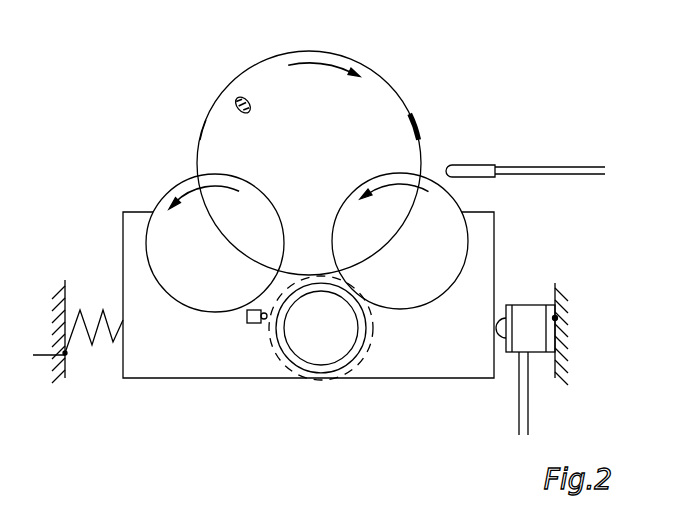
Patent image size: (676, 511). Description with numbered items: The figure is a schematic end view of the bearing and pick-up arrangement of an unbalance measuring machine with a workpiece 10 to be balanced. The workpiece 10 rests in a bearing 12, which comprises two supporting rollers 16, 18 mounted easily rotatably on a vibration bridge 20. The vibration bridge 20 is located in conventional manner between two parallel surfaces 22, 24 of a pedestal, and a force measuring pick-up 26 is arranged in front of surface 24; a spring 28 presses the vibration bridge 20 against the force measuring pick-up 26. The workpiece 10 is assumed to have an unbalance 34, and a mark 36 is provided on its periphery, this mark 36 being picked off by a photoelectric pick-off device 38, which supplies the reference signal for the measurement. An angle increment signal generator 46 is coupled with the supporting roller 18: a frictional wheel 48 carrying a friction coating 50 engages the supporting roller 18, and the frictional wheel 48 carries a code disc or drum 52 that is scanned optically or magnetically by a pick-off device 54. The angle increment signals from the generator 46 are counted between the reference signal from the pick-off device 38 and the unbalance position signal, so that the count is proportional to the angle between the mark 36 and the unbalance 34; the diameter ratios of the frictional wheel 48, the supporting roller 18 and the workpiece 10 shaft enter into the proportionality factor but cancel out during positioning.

The workpiece 10 is at (366, 91).
The bearing 12 is at (206, 120).
The supporting roller 16 is at (162, 196).
The supporting roller 18 is at (455, 196).
The vibration bridge 20 is at (479, 280).
The parallel surface 22 is at (67, 300).
The parallel surface 24 is at (555, 290).
The force measuring pick-up 26 is at (519, 380).
The spring 28 is at (112, 340).
The unbalance 34 is at (247, 114).
The mark 36 is at (419, 127).
The pick-off device 38 is at (478, 164).
The angle increment signal generator 46 is at (292, 328).
The frictional wheel 48 is at (367, 335).
The friction coating 50 is at (327, 366).
The code disc or drum 52 is at (297, 280).
The pick-off device 54 is at (247, 318).